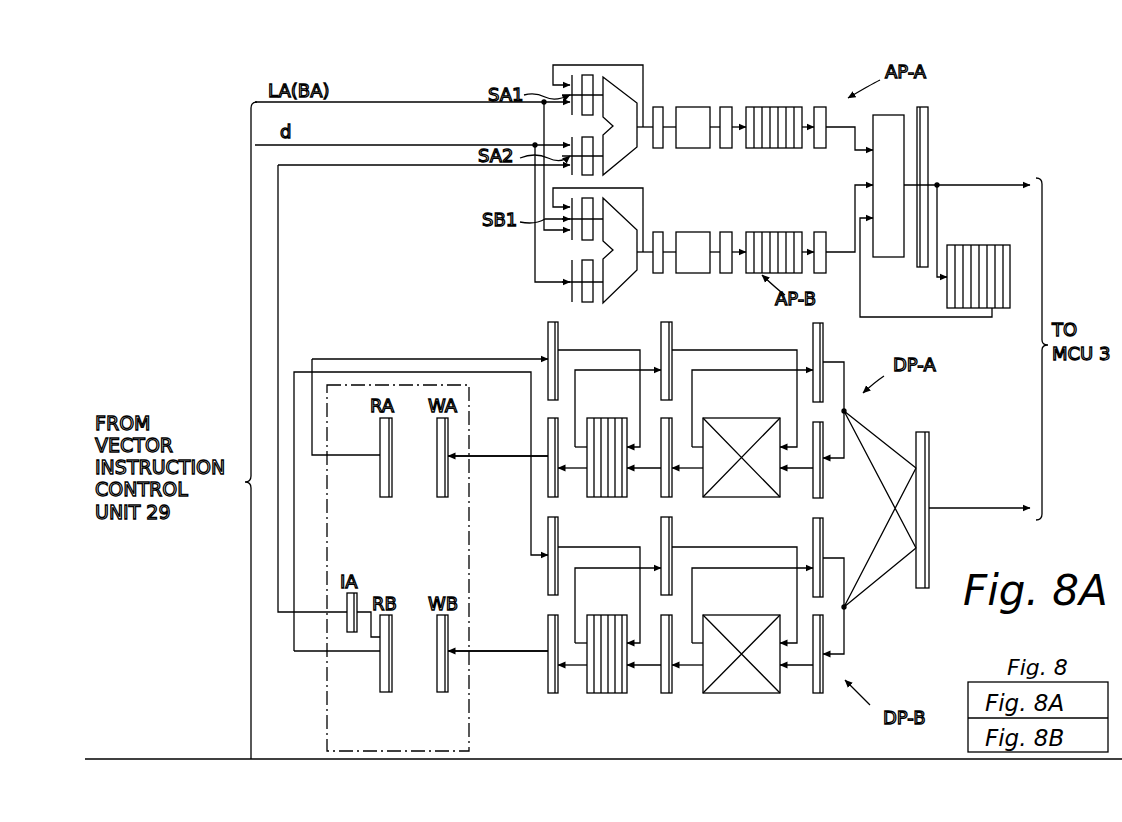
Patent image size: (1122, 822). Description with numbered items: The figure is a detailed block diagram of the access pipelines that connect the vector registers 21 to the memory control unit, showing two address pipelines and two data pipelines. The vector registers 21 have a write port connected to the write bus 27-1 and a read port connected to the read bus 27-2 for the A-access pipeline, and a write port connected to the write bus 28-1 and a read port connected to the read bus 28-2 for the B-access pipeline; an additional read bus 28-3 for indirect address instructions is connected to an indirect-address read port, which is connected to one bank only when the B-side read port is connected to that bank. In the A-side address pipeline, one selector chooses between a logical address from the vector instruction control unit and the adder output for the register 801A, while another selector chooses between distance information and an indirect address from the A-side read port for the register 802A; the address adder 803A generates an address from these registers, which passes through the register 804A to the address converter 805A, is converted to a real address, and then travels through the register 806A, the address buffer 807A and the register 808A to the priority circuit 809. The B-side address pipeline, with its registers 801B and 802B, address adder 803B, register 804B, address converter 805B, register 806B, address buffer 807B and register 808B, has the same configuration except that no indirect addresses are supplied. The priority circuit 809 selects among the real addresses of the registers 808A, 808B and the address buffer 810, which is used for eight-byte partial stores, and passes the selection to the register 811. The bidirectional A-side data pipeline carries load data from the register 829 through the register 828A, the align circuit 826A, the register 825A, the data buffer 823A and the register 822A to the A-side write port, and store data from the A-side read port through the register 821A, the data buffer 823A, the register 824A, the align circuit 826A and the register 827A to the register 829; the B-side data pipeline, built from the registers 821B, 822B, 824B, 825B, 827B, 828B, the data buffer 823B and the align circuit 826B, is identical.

The register 801A is at (588, 75).
The register 801B is at (588, 198).
The register 802A is at (588, 137).
The register 802B is at (588, 302).
The address adder 803A is at (625, 158).
The address adder 803B is at (625, 287).
The register 804A is at (658, 107).
The register 804B is at (658, 232).
The address converter 805A is at (700, 100).
The address converter 805B is at (695, 228).
The register 806A is at (727, 107).
The register 806B is at (727, 232).
The address buffer 807A is at (800, 104).
The address buffer 807B is at (800, 228).
The register 808A is at (820, 107).
The register 808B is at (820, 232).
The priority circuit 809 is at (888, 115).
The address buffer 810 is at (977, 245).
The register 811 is at (925, 107).
The register 821A is at (548, 330).
The register 821B is at (548, 576).
The register 822A is at (548, 480).
The register 822B is at (553, 693).
The data buffer 823A is at (607, 418).
The data buffer 823B is at (607, 693).
The register 824A is at (672, 336).
The register 824B is at (661, 532).
The register 825A is at (672, 497).
The register 825B is at (667, 693).
The align circuit 826A is at (740, 418).
The align circuit 826B is at (740, 693).
The register 827A is at (823, 338).
The register 827B is at (823, 546).
The register 828A is at (823, 482).
The register 828B is at (818, 693).
The register 829 is at (929, 440).
The vector registers 21 is at (469, 535).
The write bus 27-1 is at (497, 456).
The read bus 27-2 is at (312, 455).
The write bus 28-1 is at (500, 654).
The read bus 28-2 is at (310, 651).
The additional read bus 28-3 is at (278, 605).